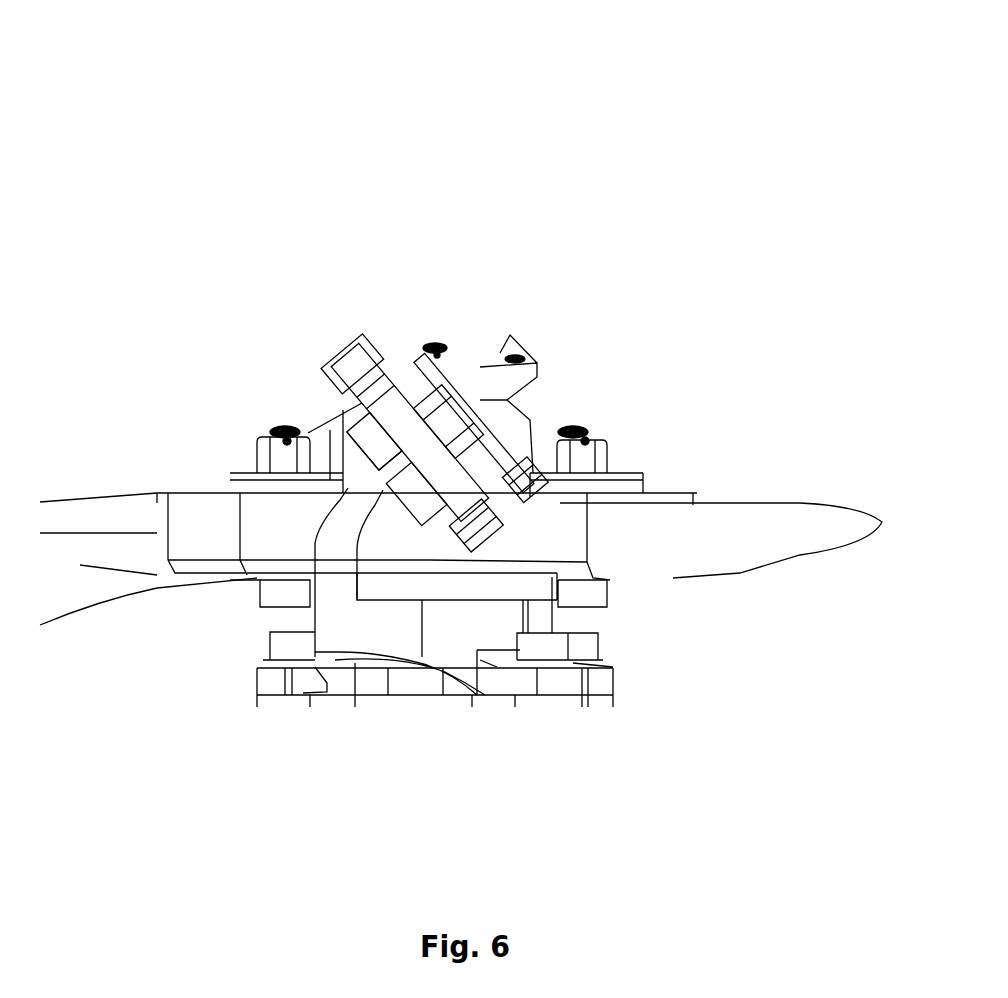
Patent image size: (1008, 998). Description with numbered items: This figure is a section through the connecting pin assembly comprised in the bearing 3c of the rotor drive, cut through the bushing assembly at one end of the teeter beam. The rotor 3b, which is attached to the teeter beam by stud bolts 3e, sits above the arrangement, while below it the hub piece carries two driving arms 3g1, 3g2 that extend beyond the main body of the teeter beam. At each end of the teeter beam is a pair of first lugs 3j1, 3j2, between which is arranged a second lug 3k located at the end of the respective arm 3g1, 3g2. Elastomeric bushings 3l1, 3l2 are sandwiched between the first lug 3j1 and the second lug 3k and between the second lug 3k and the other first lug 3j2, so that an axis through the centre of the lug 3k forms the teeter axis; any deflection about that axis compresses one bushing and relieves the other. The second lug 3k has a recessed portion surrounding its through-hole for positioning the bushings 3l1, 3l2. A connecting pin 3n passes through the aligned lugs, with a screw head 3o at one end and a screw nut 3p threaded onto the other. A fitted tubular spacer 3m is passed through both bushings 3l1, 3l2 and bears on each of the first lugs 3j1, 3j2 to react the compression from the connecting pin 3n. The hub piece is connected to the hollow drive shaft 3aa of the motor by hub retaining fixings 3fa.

The bearing 3c is at (322, 193).
The screw nut 3p is at (373, 345).
The connecting pin 3n is at (405, 413).
The second lug 3k is at (473, 417).
The stud bolt 3e is at (283, 428).
The tubular spacer 3m is at (387, 427).
The rotor 3b is at (670, 468).
The first lug 3j1 is at (345, 420).
The first lug 3j2 is at (512, 492).
The screw head 3o is at (507, 530).
The driving arm 3g1 is at (340, 557).
The driving arm 3g2 is at (353, 668).
The hub retaining fixing 3fa is at (295, 642).
The elastomeric bushing 3l1 is at (387, 463).
The elastomeric bushing 3l2 is at (433, 502).
The drive shaft 3aa is at (540, 708).